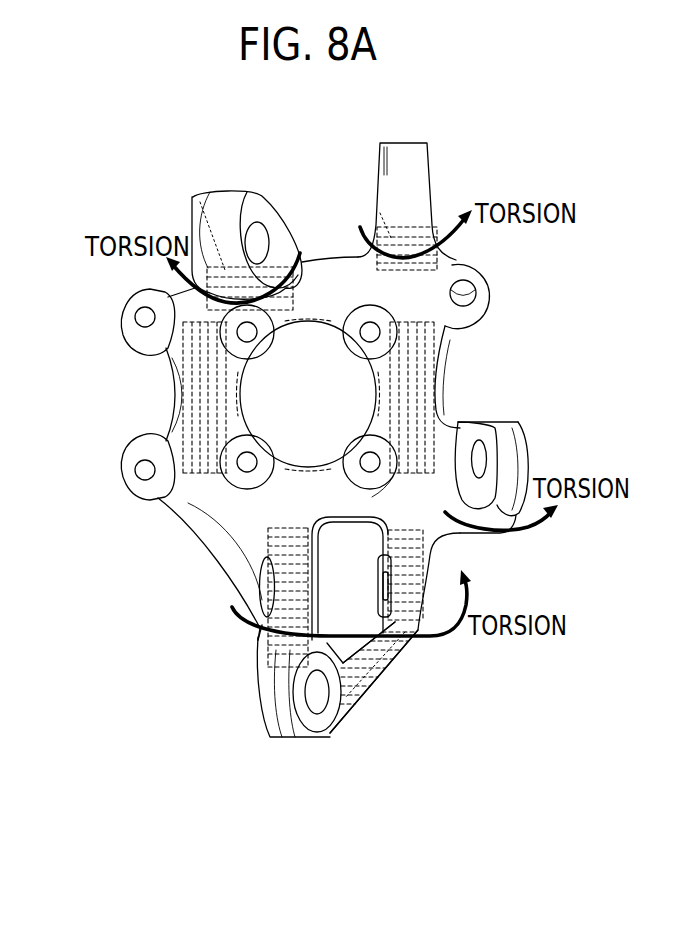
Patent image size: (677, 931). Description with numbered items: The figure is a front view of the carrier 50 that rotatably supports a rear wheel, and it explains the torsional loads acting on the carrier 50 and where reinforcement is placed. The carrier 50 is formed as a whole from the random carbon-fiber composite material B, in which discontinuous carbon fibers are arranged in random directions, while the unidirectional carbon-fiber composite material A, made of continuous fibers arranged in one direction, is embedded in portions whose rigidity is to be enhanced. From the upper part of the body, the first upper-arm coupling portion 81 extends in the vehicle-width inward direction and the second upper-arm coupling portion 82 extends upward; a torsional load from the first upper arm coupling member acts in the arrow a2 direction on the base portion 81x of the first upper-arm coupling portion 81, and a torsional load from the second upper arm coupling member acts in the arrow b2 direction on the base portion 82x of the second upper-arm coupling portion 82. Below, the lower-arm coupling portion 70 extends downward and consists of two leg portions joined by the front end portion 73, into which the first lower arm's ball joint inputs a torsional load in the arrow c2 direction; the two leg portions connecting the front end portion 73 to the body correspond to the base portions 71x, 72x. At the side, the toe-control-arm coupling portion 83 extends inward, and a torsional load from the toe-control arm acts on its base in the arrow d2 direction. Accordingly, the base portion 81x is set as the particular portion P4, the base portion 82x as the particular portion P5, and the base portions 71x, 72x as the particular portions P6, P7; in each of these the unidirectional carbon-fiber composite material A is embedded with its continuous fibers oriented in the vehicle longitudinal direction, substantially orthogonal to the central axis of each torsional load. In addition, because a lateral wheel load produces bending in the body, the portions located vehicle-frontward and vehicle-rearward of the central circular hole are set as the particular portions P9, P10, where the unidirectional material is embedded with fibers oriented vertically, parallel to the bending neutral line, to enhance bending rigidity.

The carrier 50 is at (128, 174).
The lower-arm coupling portion 70 is at (399, 690).
The base portion 71x is at (292, 560).
The base portion 72x is at (390, 553).
The front end portion 73 is at (263, 725).
The first upper-arm coupling portion 81 is at (215, 198).
The base portion 81x is at (200, 248).
The second upper-arm coupling portion 82 is at (430, 166).
The base portion 82x is at (377, 219).
The toe-control-arm coupling portion 83 is at (495, 422).
The particular portion P4 is at (313, 263).
The particular portion P5 is at (426, 214).
The particular portion P6 is at (267, 640).
The particular portion P7 is at (393, 657).
The particular portion P9 is at (195, 412).
The particular portion P10 is at (422, 373).
The unidirectional carbon-fiber composite material A is at (217, 228).
The random carbon-fiber composite material B is at (227, 522).
The arrow a2 direction a2 is at (221, 278).
The arrow b2 direction b2 is at (428, 234).
The arrow c2 direction c2 is at (351, 614).
The arrow d2 direction d2 is at (501, 533).